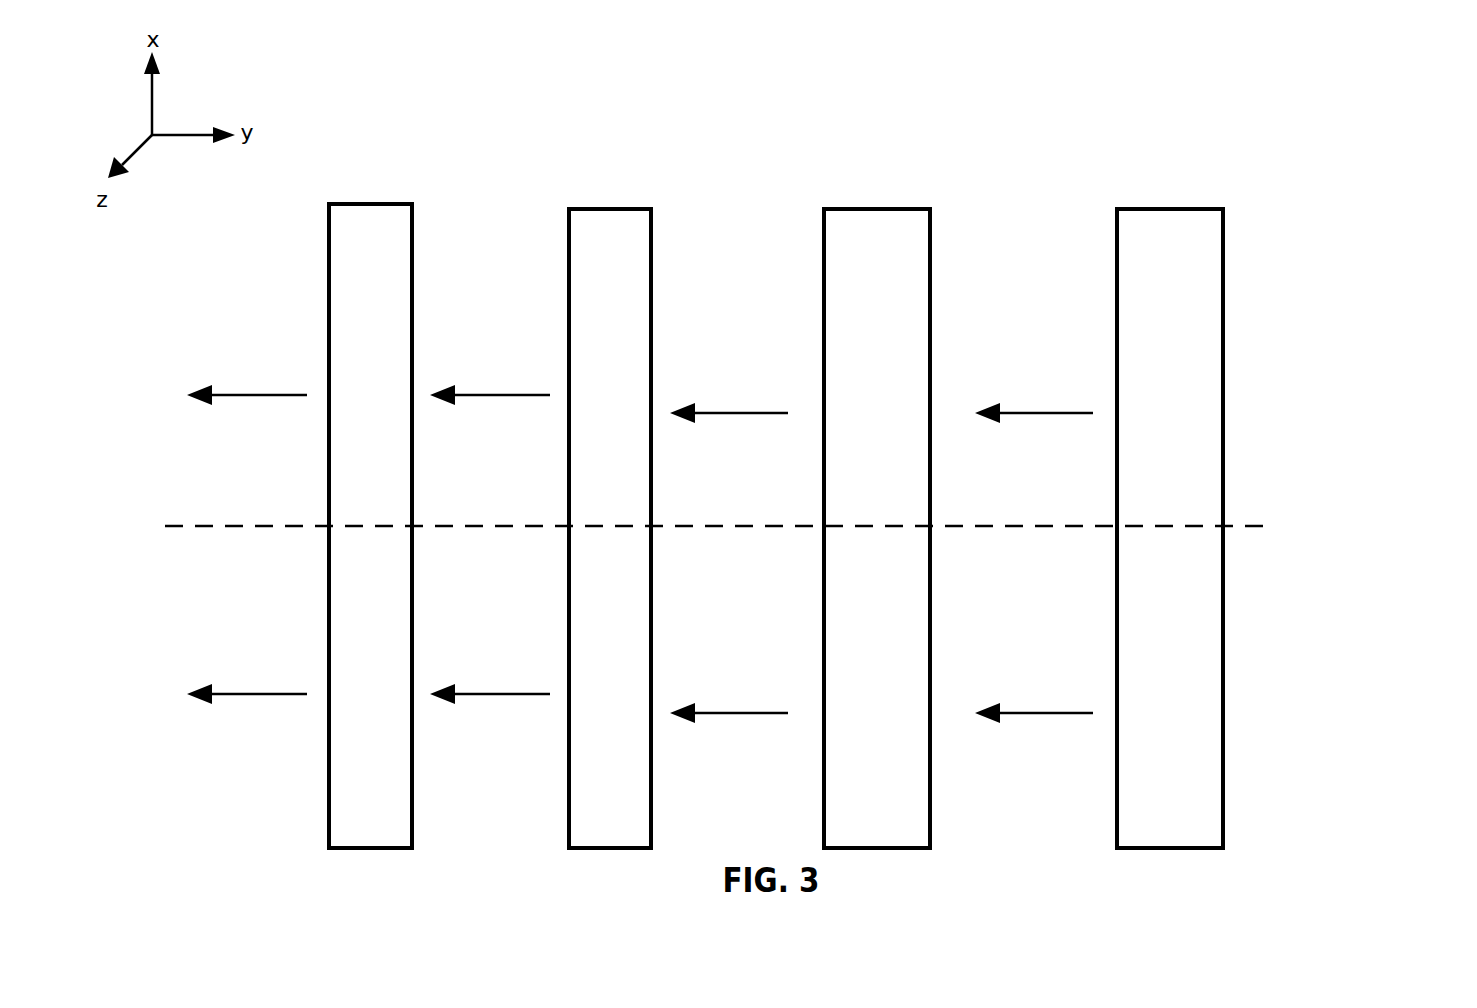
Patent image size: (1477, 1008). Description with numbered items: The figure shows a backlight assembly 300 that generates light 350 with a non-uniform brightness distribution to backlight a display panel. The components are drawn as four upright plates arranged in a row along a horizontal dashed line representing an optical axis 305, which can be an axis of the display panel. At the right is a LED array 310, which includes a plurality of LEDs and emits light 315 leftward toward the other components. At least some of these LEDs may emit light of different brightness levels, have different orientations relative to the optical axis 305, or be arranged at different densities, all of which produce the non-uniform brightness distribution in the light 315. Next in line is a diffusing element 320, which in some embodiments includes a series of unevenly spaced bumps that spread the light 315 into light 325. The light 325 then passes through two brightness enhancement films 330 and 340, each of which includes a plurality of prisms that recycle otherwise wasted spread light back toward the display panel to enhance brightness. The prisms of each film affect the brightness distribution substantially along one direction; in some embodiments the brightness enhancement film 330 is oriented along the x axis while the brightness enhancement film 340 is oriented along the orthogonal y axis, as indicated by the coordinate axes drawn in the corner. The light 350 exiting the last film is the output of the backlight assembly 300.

The backlight assembly 300 is at (773, 60).
The optical axis 305 is at (1248, 528).
The LED array 310 is at (1188, 193).
The light 315 is at (1034, 527).
The diffusing element 320 is at (893, 207).
The light 325 is at (609, 518).
The brightness enhancement film 330 is at (615, 197).
The brightness enhancement film 340 is at (378, 200).
The light 350 is at (247, 511).